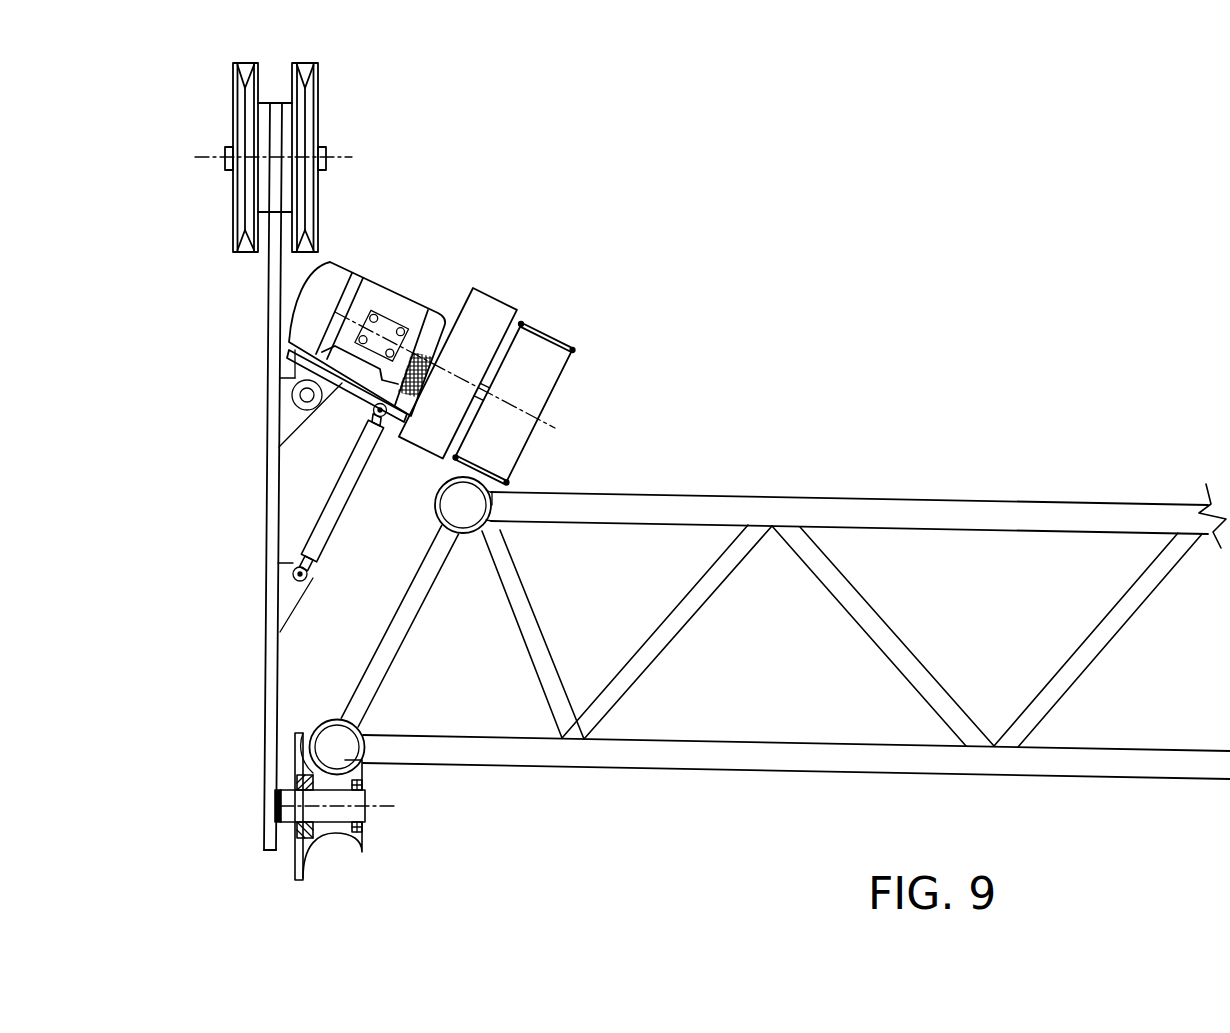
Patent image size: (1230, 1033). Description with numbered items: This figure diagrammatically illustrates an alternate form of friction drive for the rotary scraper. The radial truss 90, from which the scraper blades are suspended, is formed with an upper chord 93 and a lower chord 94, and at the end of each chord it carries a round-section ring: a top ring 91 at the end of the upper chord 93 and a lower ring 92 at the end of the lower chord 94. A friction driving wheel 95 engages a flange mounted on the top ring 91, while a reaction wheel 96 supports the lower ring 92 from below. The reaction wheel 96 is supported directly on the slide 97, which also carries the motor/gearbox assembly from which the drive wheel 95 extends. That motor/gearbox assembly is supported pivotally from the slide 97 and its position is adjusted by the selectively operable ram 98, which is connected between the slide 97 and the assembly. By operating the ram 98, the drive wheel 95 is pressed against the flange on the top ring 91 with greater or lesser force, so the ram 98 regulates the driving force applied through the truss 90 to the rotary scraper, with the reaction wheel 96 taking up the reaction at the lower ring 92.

The radial truss 90 is at (935, 505).
The top ring 91 is at (468, 512).
The lower ring 92 is at (338, 745).
The upper chord 93 is at (680, 505).
The lower chord 94 is at (637, 757).
The friction driving wheel 95 is at (545, 384).
The reaction wheel 96 is at (355, 837).
The slide 97 is at (270, 712).
The selectively operable ram 98 is at (330, 523).